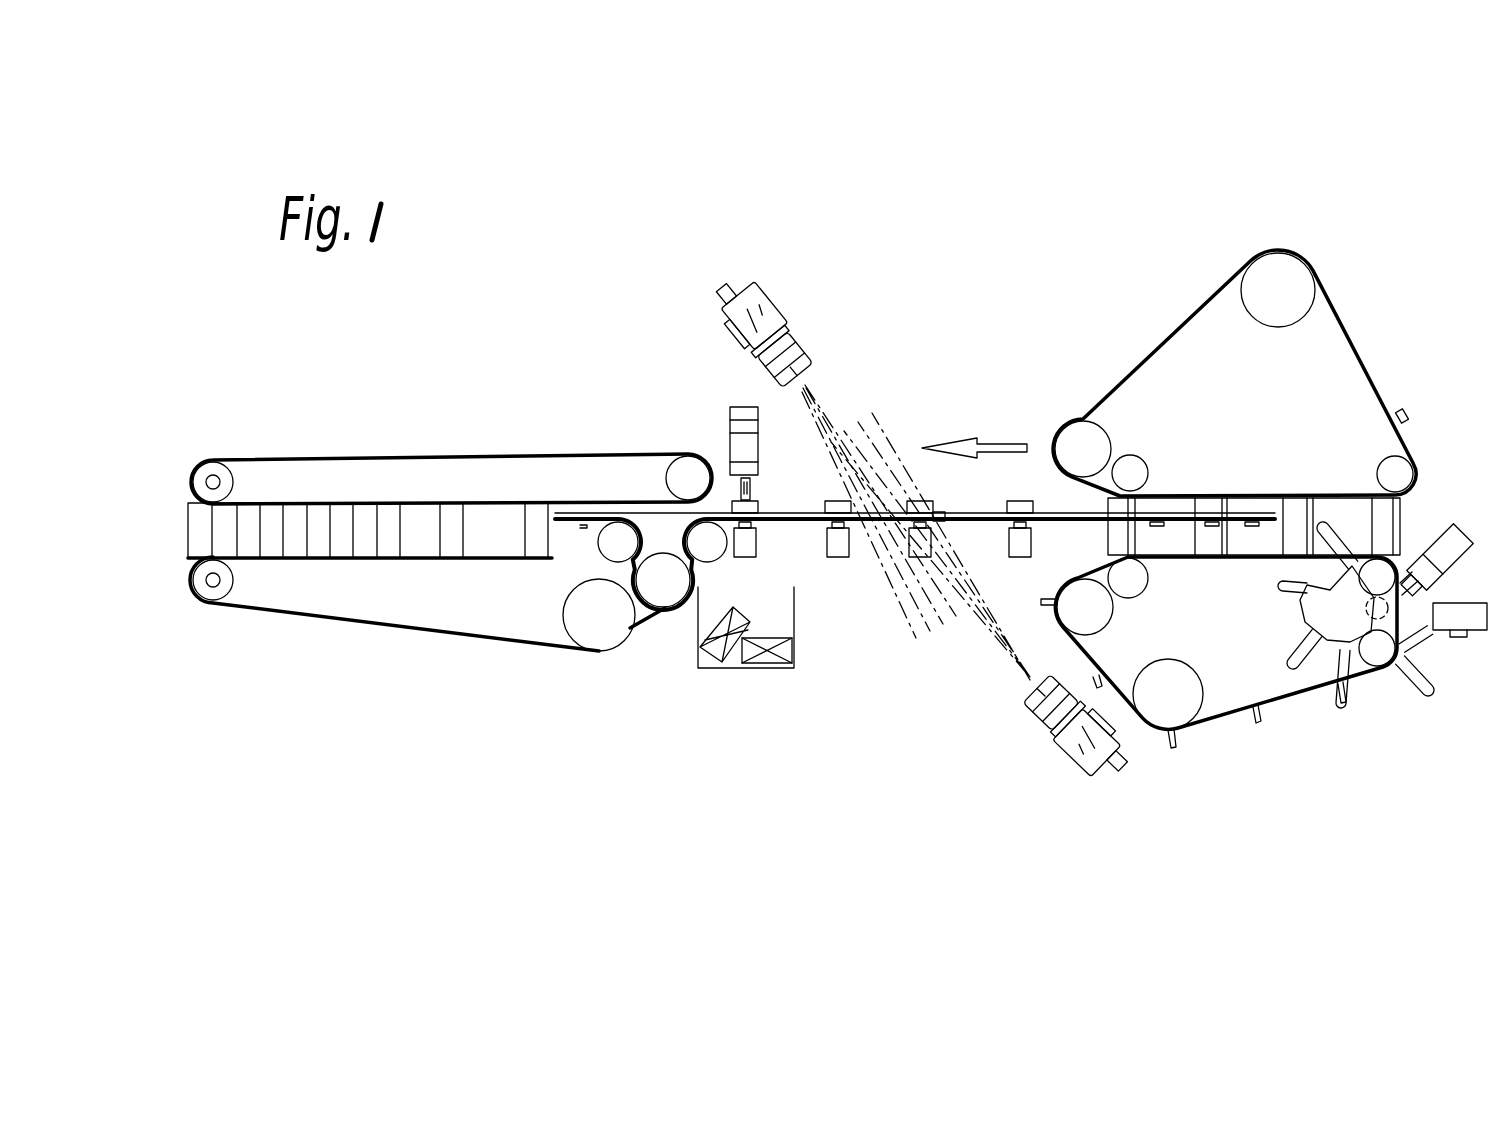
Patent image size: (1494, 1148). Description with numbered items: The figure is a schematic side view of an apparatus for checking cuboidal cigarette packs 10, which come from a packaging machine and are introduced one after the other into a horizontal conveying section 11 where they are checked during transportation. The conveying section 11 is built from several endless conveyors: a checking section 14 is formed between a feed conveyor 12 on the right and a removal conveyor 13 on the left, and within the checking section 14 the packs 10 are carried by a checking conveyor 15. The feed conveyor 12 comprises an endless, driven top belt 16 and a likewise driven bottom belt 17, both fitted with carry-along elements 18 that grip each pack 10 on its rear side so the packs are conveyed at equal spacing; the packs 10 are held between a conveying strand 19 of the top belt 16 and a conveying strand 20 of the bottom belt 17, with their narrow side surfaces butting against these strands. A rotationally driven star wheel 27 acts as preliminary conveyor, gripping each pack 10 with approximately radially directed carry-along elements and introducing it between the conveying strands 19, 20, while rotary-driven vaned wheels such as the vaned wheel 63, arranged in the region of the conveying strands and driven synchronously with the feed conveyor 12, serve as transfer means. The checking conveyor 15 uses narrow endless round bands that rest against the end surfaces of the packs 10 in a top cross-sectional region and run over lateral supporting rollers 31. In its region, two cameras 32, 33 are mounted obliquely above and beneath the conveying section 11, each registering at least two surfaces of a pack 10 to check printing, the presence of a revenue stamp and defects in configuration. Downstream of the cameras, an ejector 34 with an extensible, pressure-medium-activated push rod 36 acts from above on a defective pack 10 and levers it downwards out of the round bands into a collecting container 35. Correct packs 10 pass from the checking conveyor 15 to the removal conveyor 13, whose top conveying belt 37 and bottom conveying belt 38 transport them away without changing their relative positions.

The pack 10 is at (762, 668).
The conveying section 11 is at (995, 290).
The feed conveyor 12 is at (1224, 533).
The removal conveyor 13 is at (457, 501).
The checking section 14 is at (888, 340).
The checking conveyor 15 is at (873, 547).
The top belt 16 is at (1243, 338).
The bottom belt 17 is at (1219, 741).
The carry-along element 18 is at (1402, 418).
The conveying strand of the top belt 19 is at (1258, 497).
The conveying strand of the bottom belt 20 is at (1258, 560).
The star wheel 27 is at (1345, 635).
The supporting roller 31 is at (920, 513).
The camera 32 is at (762, 312).
The camera 33 is at (1100, 757).
The ejector 34 is at (652, 401).
The collecting container 35 is at (698, 663).
The push rod 36 is at (740, 488).
The top conveying belt 37 is at (298, 448).
The bottom conveying belt 38 is at (288, 622).
The vaned wheel 63 is at (1130, 470).